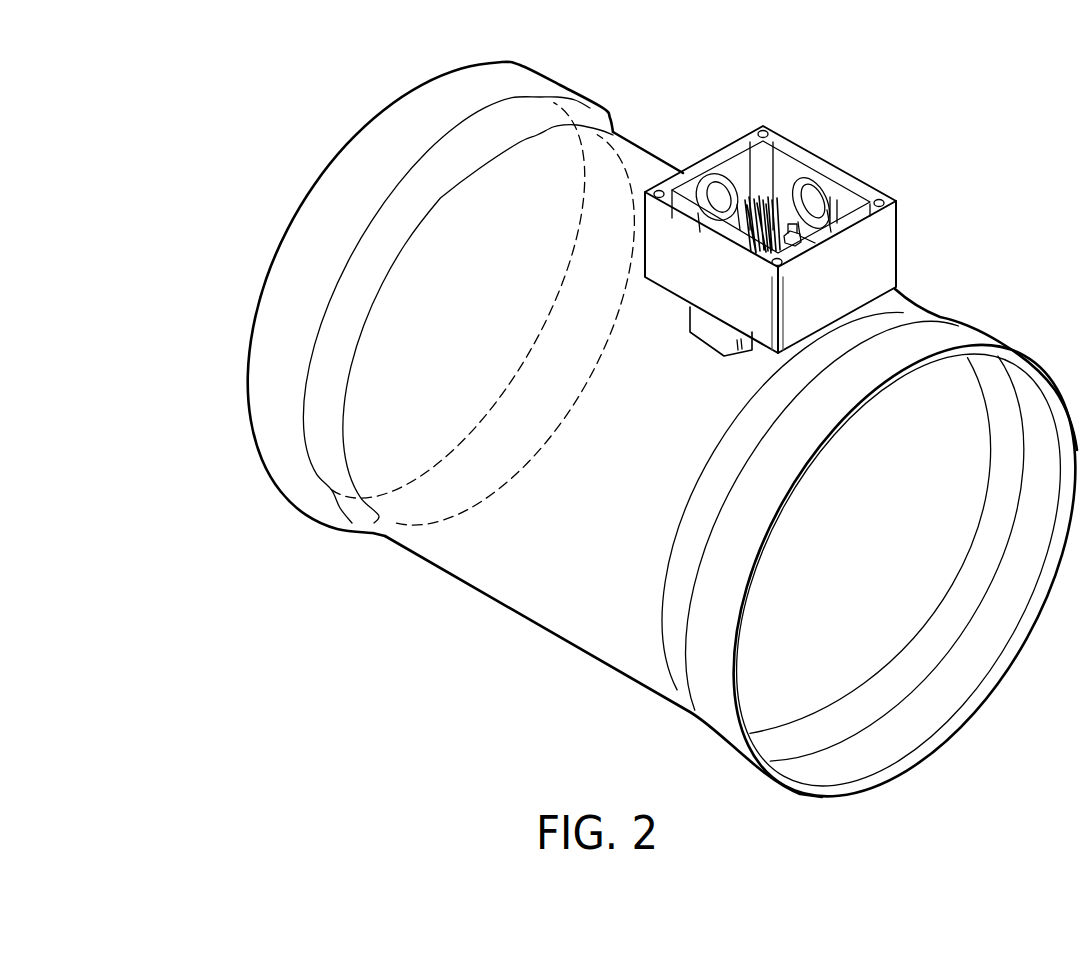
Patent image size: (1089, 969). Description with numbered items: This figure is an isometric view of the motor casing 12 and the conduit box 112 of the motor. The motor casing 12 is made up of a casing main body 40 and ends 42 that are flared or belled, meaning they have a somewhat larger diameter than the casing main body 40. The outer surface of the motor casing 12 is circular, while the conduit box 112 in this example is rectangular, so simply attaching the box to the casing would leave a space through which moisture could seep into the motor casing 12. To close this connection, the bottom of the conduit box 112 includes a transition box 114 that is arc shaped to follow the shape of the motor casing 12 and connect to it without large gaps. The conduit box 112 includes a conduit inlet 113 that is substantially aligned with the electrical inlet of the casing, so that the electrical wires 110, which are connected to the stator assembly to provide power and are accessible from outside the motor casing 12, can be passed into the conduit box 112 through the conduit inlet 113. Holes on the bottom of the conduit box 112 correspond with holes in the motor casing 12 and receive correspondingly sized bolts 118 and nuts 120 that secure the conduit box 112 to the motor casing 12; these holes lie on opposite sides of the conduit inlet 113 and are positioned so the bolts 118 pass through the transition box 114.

The motor casing 12 is at (977, 333).
The casing main body 40 is at (505, 590).
The ends 42 is at (267, 407).
The electrical wires 110 is at (792, 224).
The conduit box 112 is at (896, 235).
The conduit inlet 113 is at (740, 228).
The transition box 114 is at (712, 327).
The bolts 118 is at (818, 226).
The nuts 120 is at (830, 204).